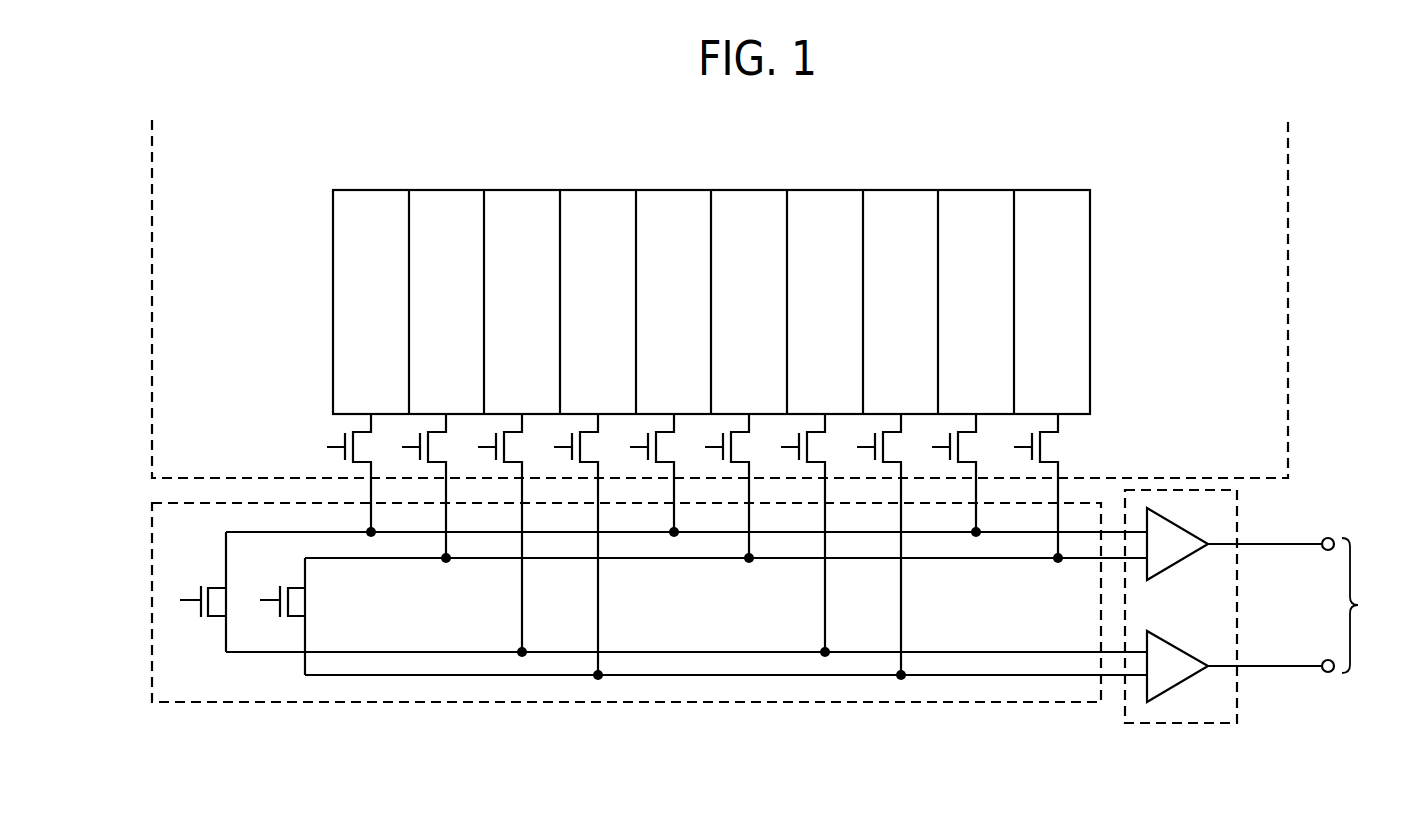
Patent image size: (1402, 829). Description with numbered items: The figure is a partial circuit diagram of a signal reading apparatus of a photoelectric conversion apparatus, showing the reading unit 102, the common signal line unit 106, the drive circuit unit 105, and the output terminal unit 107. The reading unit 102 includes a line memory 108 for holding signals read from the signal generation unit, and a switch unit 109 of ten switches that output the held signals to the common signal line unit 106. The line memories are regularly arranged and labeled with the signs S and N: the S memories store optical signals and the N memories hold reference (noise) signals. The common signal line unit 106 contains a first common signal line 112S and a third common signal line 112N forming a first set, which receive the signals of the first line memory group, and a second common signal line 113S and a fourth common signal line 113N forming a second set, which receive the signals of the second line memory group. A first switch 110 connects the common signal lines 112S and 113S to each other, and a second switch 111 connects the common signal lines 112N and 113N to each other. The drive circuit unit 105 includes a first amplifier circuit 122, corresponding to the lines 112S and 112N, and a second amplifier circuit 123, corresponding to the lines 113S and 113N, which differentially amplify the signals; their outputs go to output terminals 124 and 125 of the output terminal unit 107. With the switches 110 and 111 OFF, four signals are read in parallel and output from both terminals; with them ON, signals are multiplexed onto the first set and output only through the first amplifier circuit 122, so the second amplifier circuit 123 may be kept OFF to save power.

The reading unit 102 is at (152, 337).
The drive circuit unit 105 is at (1142, 724).
The common signal line unit 106 is at (152, 612).
The output terminal unit 107 is at (1370, 605).
The line memory 108 is at (283, 188).
The switch unit 109 is at (283, 416).
The switch 110 is at (222, 600).
The switch 111 is at (302, 607).
The first common signal line 112S is at (625, 534).
The third common signal line 112N is at (720, 559).
The fourth common signal line 113N is at (938, 675).
The second common signal line 113S is at (1048, 652).
The first amplifier circuit 122 is at (1183, 528).
The second amplifier circuit 123 is at (1188, 675).
The output terminal 124 is at (1328, 537).
The output terminal 125 is at (1328, 673).